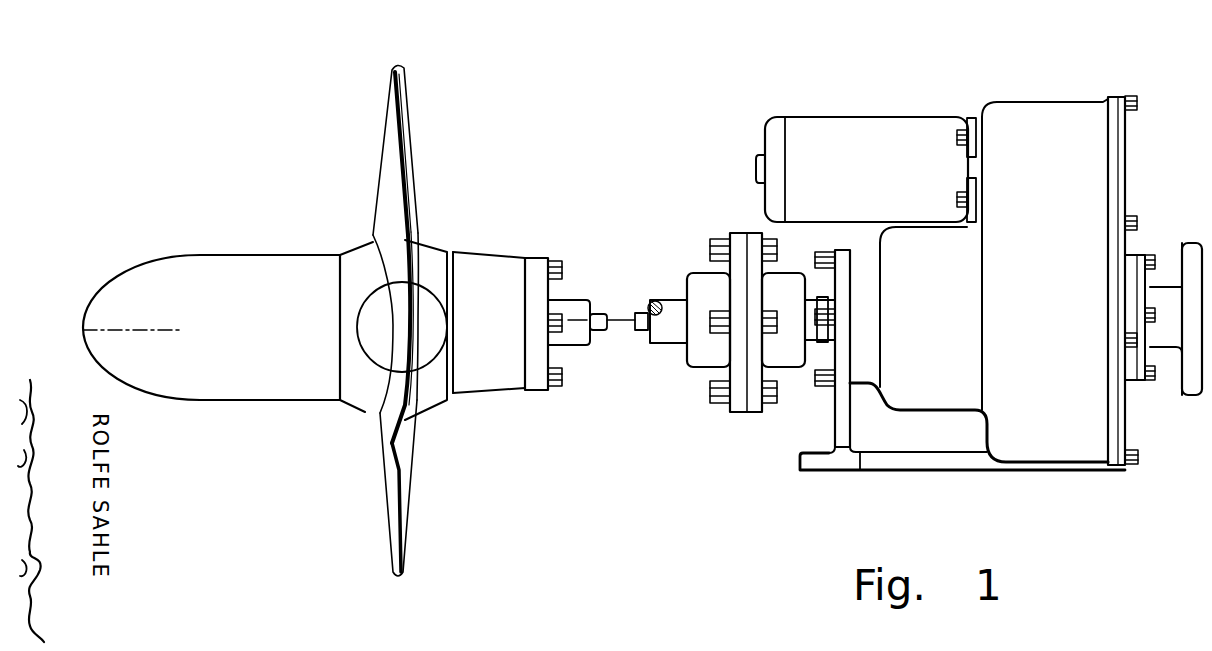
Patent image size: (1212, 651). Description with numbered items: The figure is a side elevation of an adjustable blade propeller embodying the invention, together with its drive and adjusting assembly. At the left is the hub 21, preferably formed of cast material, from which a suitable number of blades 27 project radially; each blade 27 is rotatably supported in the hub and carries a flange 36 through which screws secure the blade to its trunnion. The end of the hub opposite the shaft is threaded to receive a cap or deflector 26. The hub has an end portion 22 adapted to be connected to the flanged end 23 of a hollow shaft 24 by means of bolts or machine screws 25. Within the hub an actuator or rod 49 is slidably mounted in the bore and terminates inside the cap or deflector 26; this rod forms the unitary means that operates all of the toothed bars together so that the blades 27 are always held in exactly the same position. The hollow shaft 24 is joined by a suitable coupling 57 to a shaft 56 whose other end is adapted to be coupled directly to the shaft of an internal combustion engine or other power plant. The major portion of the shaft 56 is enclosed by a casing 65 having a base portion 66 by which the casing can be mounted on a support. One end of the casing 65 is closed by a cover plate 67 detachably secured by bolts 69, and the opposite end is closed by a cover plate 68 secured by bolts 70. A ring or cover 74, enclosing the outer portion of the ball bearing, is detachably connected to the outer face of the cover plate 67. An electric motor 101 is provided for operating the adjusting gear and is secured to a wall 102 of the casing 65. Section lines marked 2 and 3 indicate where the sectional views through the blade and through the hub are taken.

The section line 2- 2 is at (445, 60).
The section line 3- 3 is at (617, 300).
The hub 21 is at (427, 250).
The end portion 22 is at (513, 260).
The flanged end 23 is at (537, 260).
The hollow shaft 24 is at (667, 302).
The bolts or machine screws 25 is at (555, 393).
The cap or deflector 26 is at (221, 263).
The blades 27 is at (412, 178).
The flange 36 is at (380, 343).
The actuator or rod 49 is at (595, 333).
The shaft 56 is at (1163, 288).
The coupling 57 is at (752, 238).
The casing 65 is at (979, 280).
The base portion 66 is at (812, 456).
The cover plate 67 is at (1125, 163).
The cover plate 68 is at (829, 254).
The bolts 69 is at (1140, 103).
The bolts 70 is at (813, 381).
The ring or cover 74 is at (1143, 381).
The electric motor 101 is at (862, 169).
The wall 102 is at (984, 151).